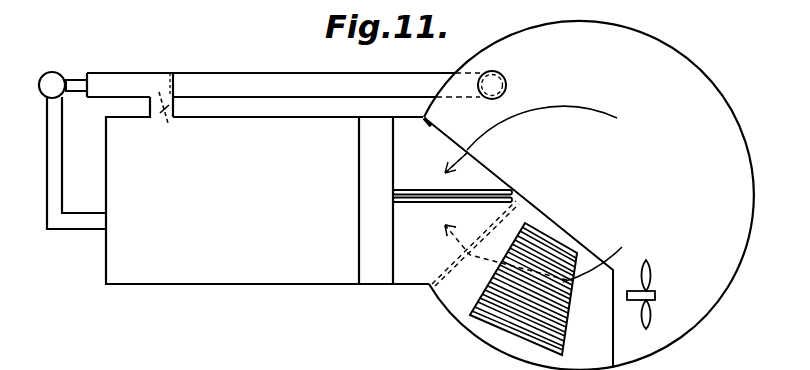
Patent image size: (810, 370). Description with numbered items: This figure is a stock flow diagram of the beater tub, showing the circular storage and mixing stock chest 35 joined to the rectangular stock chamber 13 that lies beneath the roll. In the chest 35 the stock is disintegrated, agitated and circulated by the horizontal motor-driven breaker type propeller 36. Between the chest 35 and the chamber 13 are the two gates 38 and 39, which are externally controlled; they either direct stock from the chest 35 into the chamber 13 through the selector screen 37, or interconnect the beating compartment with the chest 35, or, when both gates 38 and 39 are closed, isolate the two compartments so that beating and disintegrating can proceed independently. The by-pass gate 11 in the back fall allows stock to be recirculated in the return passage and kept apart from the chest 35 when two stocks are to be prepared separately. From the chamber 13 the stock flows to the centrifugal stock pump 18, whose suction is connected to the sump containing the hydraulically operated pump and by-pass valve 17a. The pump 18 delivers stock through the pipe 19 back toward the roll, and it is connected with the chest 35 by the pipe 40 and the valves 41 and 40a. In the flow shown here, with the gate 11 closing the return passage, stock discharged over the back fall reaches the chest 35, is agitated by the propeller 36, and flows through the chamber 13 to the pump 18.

The by-pass gate 11 is at (376, 200).
The stock chamber 13 is at (267, 190).
The hydraulically operated pump and by-pass valve 17a is at (231, 166).
The centrifugal stock pump 18 is at (52, 74).
The pipe 19 is at (50, 170).
The storage and mixing stock chest 35 is at (722, 98).
The breaker type propeller 36 is at (654, 272).
The selector screen 37 is at (560, 318).
The gate 38 is at (420, 190).
The gate 39 is at (427, 204).
The pipe 40 is at (303, 76).
The valve 40a is at (498, 81).
The valve 41 is at (172, 77).